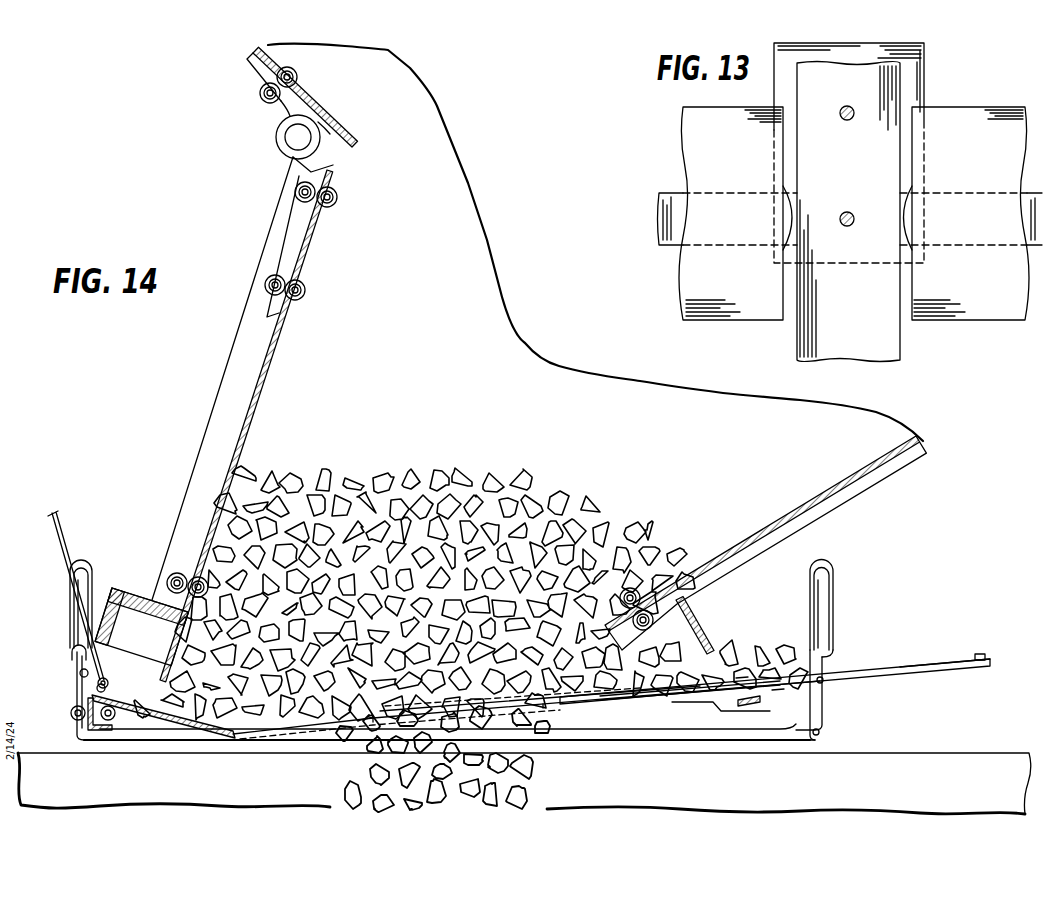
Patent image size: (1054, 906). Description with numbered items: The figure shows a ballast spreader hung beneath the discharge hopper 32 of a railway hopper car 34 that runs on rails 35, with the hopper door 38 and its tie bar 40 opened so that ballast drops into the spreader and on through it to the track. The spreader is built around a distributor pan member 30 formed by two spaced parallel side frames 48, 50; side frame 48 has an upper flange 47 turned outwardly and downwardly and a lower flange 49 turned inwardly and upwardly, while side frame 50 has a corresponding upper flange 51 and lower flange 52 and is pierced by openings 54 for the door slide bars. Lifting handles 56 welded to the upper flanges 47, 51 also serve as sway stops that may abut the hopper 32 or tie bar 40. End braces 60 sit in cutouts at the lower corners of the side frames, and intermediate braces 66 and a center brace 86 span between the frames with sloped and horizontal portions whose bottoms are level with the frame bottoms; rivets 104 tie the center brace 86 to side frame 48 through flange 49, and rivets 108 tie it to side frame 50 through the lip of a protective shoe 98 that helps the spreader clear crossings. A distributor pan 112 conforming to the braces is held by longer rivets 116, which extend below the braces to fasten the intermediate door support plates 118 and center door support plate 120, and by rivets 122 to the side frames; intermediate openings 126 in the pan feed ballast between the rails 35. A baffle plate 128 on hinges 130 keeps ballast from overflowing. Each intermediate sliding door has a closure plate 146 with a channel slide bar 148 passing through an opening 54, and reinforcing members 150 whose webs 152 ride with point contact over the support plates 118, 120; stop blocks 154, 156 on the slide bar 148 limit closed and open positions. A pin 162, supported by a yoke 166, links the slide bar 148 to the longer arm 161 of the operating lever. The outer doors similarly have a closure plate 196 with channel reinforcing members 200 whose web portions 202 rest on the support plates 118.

In FIG. 14, the distributor pan member 30 is at (838, 601).
In FIG. 14, the discharge hopper 32 is at (912, 456).
In FIG. 14, the railway hopper car 34 is at (258, 50).
In FIG. 14, the rails 35 is at (898, 765).
In FIG. 14, the doors 38 is at (271, 342).
In FIG. 14, the tie bar 40 is at (118, 587).
In FIG. 14, the upper flange 47 is at (72, 652).
In FIG. 14, the side frame 48 is at (97, 689).
In FIG. 14, the lower flange 49 is at (107, 735).
In FIG. 14, the side frame 50 is at (823, 708).
In FIG. 14, the upper flange 51 is at (831, 642).
In FIG. 14, the lower flange 52 is at (798, 739).
In FIG. 14, the openings 54 is at (818, 682).
In FIG. 14, the lifting handles 56 is at (82, 558).
In FIG. 14, the end braces 60 is at (200, 741).
In FIG. 13, the intermediate braces 66 is at (788, 333).
In FIG. 14, the center brace 86 is at (167, 726).
In FIG. 14, the protective shoe 98 is at (664, 750).
In FIG. 14, the rivets 104 is at (71, 714).
In FIG. 14, the rivets 108 is at (820, 731).
In FIG. 14, the distributor pan 112 is at (741, 676).
In FIG. 13, the longer rivets 116 is at (841, 113).
In FIG. 13, the intermediate door support plates 118 is at (915, 85).
In FIG. 14, the center door support plate 120 is at (553, 711).
In FIG. 14, the rivets 122 is at (80, 673).
In FIG. 14, the intermediate openings 126 is at (372, 720).
In FIG. 14, the baffle plate 128 is at (63, 550).
In FIG. 14, the hinges 130 is at (106, 680).
In FIG. 13, the closure plate 146 is at (692, 275).
In FIG. 14, the closure plate 146 is at (657, 694).
In FIG. 14, the slide bar 148 is at (937, 672).
In FIG. 13, the reinforcing members 150 is at (665, 206).
In FIG. 14, the reinforcing members 150 is at (530, 710).
In FIG. 13, the webs 152 is at (796, 200).
In FIG. 14, the stop block 154 is at (980, 654).
In FIG. 14, the stop block 156 is at (823, 678).
In FIG. 14, the longer arm 161 is at (777, 688).
In FIG. 14, the pin 162 is at (750, 707).
In FIG. 14, the yoke 166 is at (713, 703).
In FIG. 13, the closure plate 196 is at (987, 310).
In FIG. 13, the channel reinforcing members 200 is at (997, 197).
In FIG. 13, the web portions 202 is at (908, 195).